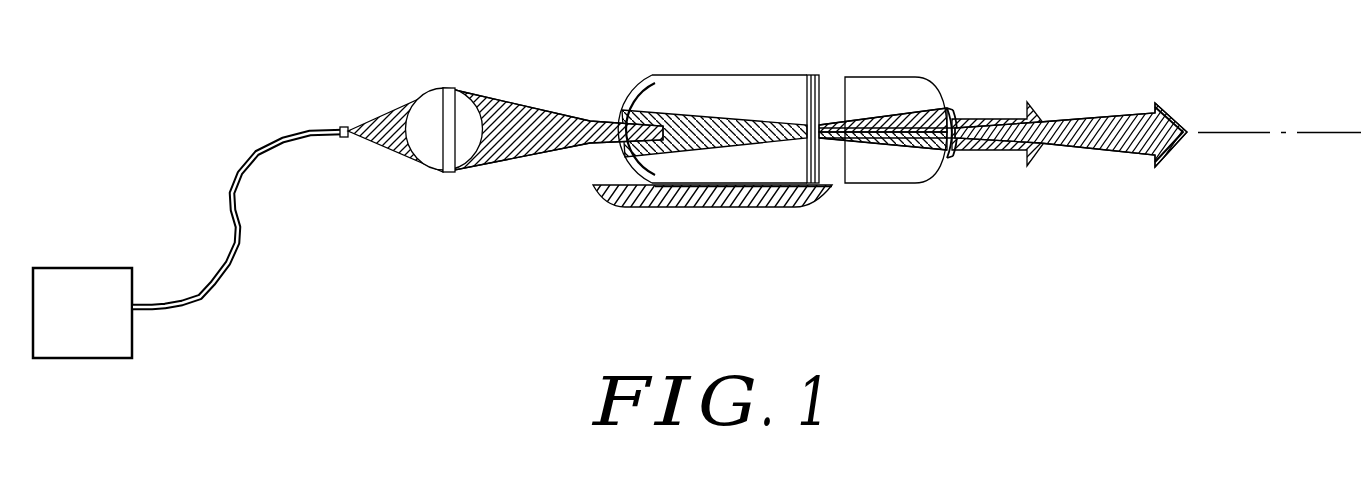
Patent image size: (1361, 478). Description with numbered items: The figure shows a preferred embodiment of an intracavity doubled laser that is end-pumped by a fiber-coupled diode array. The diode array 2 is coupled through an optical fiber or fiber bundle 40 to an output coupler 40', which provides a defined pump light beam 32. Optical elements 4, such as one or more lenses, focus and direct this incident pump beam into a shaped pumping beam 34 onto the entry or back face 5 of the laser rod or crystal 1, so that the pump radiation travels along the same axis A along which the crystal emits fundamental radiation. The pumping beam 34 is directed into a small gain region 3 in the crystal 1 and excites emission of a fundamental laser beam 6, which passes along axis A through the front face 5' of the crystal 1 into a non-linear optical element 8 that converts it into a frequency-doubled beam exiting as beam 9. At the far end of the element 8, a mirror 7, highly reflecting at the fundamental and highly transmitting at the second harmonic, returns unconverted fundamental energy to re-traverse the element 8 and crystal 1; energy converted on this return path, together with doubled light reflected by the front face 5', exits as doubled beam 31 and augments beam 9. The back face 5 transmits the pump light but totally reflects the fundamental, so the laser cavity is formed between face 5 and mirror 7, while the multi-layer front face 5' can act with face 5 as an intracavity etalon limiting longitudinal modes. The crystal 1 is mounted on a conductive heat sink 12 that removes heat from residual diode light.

The laser rod or crystal 1 is at (765, 195).
The diode array 2 is at (86, 268).
The gain region 3 is at (653, 127).
The optical elements 4 is at (448, 170).
The back face 5 is at (695, 207).
The front face 5' is at (845, 108).
The fundamental laser beam 6 is at (777, 127).
The mirror 7 is at (952, 160).
The non-linear optical element 8 is at (908, 75).
The frequency-doubled beam 9 is at (1108, 152).
The heat sink 12 is at (815, 190).
The doubled beam 31 is at (1043, 112).
The diverging pump beam 32 is at (387, 120).
The focused pump beam 34 is at (528, 110).
The optical fiber or fiber bundle 40 is at (238, 228).
The output coupler 40' is at (300, 109).
The axis A is at (1312, 132).